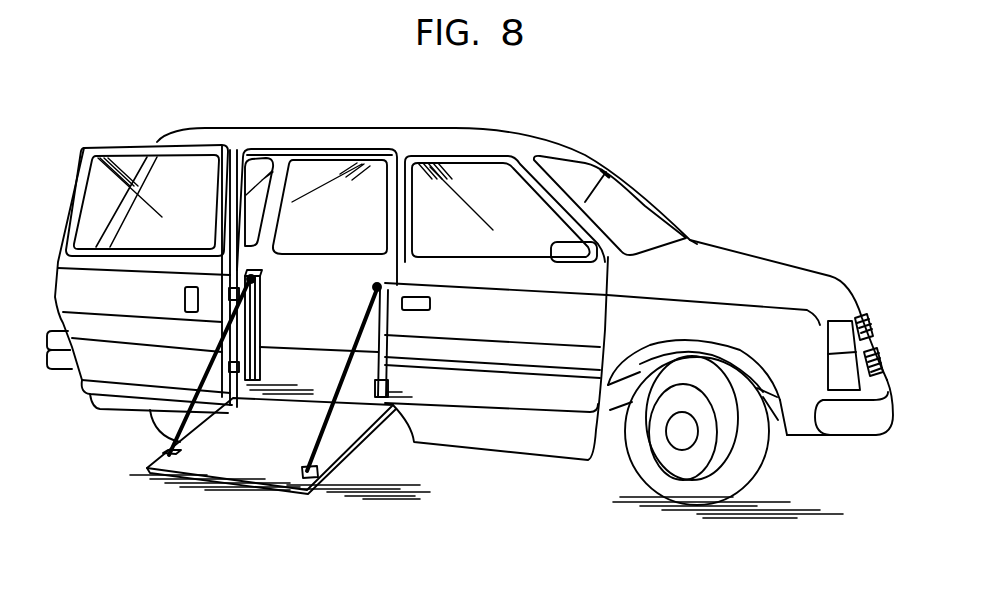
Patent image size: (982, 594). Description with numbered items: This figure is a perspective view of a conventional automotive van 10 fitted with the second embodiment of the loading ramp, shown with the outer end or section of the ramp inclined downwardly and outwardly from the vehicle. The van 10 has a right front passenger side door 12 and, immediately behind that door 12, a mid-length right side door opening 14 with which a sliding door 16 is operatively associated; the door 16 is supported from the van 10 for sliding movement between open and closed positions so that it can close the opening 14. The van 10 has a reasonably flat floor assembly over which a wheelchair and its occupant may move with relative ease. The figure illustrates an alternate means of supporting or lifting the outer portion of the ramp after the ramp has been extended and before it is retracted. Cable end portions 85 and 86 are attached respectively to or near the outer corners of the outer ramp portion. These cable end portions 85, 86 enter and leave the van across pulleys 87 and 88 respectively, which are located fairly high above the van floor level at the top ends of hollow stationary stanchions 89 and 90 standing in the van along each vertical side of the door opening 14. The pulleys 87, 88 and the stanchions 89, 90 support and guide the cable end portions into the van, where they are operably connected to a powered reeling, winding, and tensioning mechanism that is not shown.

The automotive van 10 is at (481, 124).
The right front passenger side door 12 is at (548, 402).
The right side door opening 14 is at (331, 149).
The sliding door 16 is at (172, 142).
The cable end portion 85 is at (318, 433).
The cable end portion 86 is at (168, 441).
The pulley 87 is at (374, 286).
The pulley 88 is at (259, 282).
The hollow stationary stanchion 89 is at (375, 329).
The hollow stationary stanchion 90 is at (262, 365).